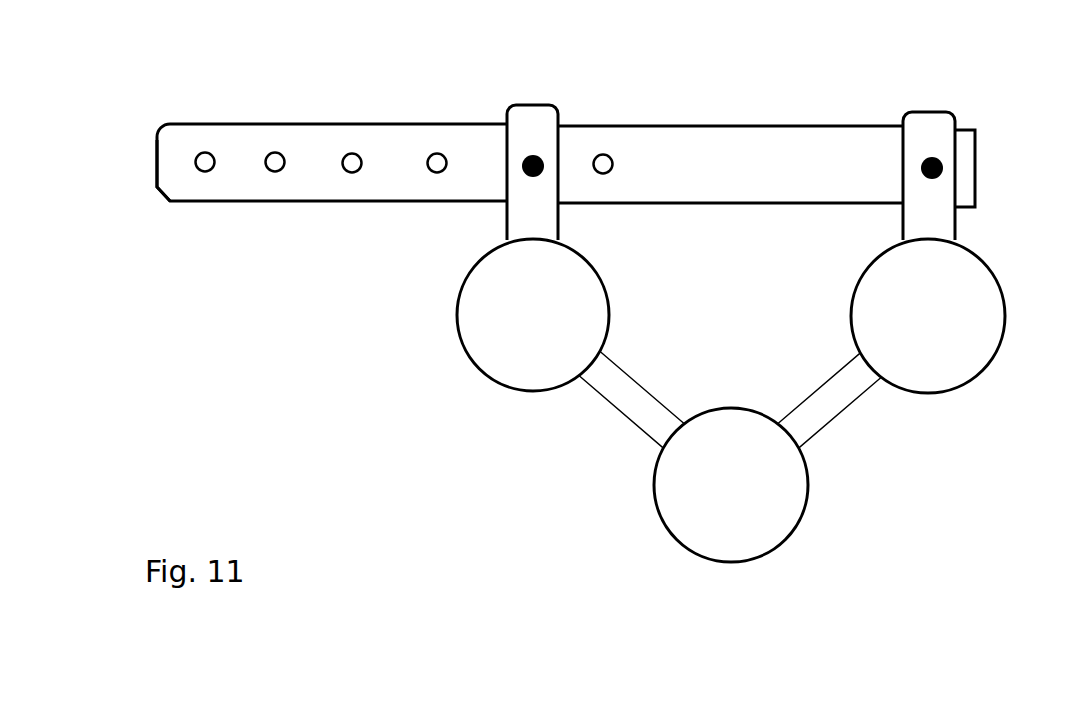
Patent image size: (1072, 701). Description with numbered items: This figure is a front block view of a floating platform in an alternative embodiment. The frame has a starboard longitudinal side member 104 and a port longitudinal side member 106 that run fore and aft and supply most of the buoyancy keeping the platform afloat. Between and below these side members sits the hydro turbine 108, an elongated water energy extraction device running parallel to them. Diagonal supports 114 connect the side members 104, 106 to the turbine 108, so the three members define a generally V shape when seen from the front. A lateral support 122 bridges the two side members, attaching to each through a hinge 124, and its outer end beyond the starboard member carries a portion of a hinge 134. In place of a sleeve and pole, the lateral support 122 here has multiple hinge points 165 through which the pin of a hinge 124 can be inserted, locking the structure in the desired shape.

The starboard longitudinal side member 104 is at (489, 401).
The port longitudinal side member 106 is at (966, 422).
The hydro turbine 108 is at (678, 576).
The diagonal supports 114 is at (622, 451).
The lateral support 122 is at (370, 101).
The hinge 124 is at (577, 89).
The hinge 134 is at (172, 148).
The hinge points 165 is at (350, 186).